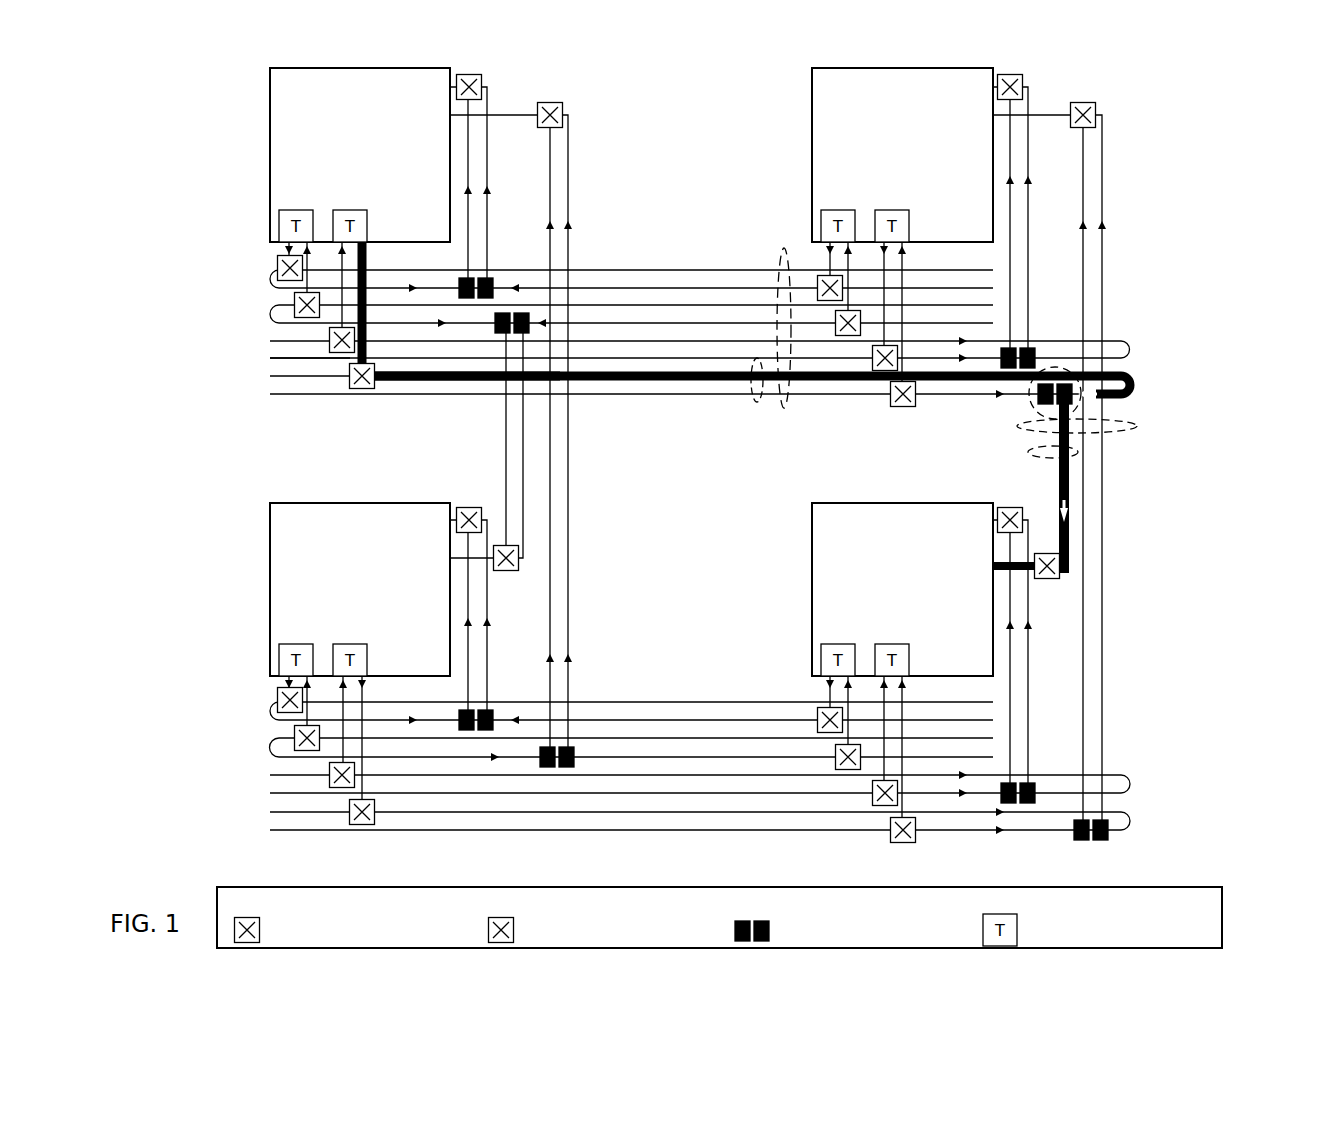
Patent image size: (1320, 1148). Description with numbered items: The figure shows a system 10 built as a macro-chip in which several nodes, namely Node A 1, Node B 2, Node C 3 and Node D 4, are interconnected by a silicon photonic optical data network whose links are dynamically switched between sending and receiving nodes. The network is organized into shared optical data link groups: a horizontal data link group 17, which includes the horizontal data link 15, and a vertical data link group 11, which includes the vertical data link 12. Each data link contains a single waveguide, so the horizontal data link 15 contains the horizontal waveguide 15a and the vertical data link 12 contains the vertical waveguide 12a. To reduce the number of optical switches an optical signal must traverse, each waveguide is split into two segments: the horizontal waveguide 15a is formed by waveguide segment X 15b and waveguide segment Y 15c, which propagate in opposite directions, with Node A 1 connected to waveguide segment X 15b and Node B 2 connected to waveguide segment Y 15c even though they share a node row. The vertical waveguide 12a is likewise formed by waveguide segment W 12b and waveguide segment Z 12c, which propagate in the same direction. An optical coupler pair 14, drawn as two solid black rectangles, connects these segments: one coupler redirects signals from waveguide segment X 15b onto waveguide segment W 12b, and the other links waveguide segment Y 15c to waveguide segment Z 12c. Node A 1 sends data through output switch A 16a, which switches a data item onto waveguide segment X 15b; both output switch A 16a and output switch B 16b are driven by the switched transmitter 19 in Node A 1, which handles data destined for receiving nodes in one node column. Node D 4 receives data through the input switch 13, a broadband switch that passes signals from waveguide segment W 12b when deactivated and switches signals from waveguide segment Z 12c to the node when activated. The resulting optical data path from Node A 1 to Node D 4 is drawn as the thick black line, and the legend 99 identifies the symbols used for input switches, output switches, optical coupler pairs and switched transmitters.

The system 10 is at (710, 452).
The Node A 1 is at (360, 155).
The Node B 2 is at (902, 155).
The Node C 3 is at (360, 589).
The Node D 4 is at (902, 589).
The switched transmitter 19 is at (338, 208).
The output switch A 16a is at (360, 388).
The output switch B 16b is at (330, 342).
The horizontal data link 15 is at (755, 404).
The horizontal waveguide 15a is at (752, 432).
The waveguide segment X 15b is at (448, 380).
The waveguide segment Y 15c is at (490, 392).
The horizontal data link group 17 is at (783, 248).
The optical coupler pair 14 is at (1033, 398).
The vertical data link group 11 is at (1138, 425).
The vertical data link 12 is at (1136, 474).
The vertical waveguide 12a is at (1080, 455).
The waveguide segment W 12b is at (1070, 555).
The waveguide segment Z 12c is at (1045, 490).
The input switch 13 is at (1047, 580).
The legend 99 is at (719, 917).